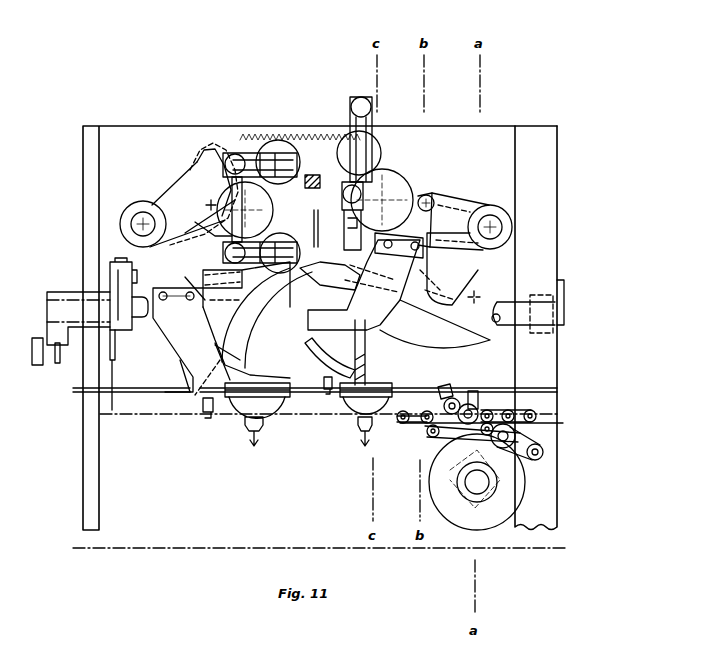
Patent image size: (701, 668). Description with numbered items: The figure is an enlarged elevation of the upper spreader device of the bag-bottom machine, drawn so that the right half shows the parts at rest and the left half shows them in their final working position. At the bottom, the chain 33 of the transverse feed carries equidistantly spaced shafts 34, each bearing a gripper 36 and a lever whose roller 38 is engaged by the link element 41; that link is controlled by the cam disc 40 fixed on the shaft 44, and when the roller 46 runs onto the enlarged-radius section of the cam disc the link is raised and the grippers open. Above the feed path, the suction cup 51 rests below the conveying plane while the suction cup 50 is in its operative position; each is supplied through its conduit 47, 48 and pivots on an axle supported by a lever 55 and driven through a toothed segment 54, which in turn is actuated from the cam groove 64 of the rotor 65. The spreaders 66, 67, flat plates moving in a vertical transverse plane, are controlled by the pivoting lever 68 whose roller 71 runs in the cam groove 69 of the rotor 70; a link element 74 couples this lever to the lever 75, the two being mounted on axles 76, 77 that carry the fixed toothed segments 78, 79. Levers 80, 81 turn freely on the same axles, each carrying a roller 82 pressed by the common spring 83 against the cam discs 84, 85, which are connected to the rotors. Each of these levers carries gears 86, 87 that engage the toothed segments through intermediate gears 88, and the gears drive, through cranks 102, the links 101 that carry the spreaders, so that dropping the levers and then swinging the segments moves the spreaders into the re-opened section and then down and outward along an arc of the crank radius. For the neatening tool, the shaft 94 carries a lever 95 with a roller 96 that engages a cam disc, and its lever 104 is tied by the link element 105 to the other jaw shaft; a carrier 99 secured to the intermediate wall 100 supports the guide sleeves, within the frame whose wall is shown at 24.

The frame wall 24 is at (532, 140).
The chain 33 is at (523, 401).
The shaft 34 is at (440, 394).
The gripper 36 is at (465, 384).
The roller 38 is at (487, 392).
The cam disc 40 is at (498, 517).
The link element 41 is at (465, 432).
The shaft 44 is at (473, 487).
The roller 46 is at (512, 455).
The conduit 47 is at (370, 418).
The conduit 48 is at (258, 427).
The suction cup 50 is at (323, 387).
The suction cup 51 is at (210, 414).
The toothed segment 54 is at (313, 359).
The lever 55 is at (363, 350).
The cam groove 64 is at (223, 318).
The rotor 65 is at (215, 343).
The spreader 66 is at (378, 307).
The spreader 67 is at (180, 362).
The pivoting lever 68 is at (491, 260).
The cam groove 69 is at (442, 315).
The rotor 70 is at (342, 288).
The roller 71 is at (490, 298).
The link element 74 is at (213, 152).
The lever 75 is at (173, 177).
The axle 76 is at (492, 228).
The axle 77 is at (142, 220).
The toothed segment 78 is at (463, 200).
The toothed segment 79 is at (160, 193).
The lever 80 is at (393, 193).
The lever 81 is at (197, 230).
The roller 82 is at (208, 205).
The spring 83 is at (358, 122).
The cam disc 84 is at (450, 265).
The cam disc 85 is at (185, 277).
The gear 86 is at (297, 161).
The gear 87 is at (288, 263).
The intermediate gear 88 is at (245, 213).
The shaft 94 is at (133, 310).
The lever 95 is at (50, 355).
The roller 96 is at (37, 355).
The carrier 99 is at (318, 188).
The intermediate wall 100 is at (118, 138).
The link 101 is at (233, 187).
The crank 102 is at (257, 247).
The lever 104 is at (130, 300).
The link element 105 is at (113, 395).